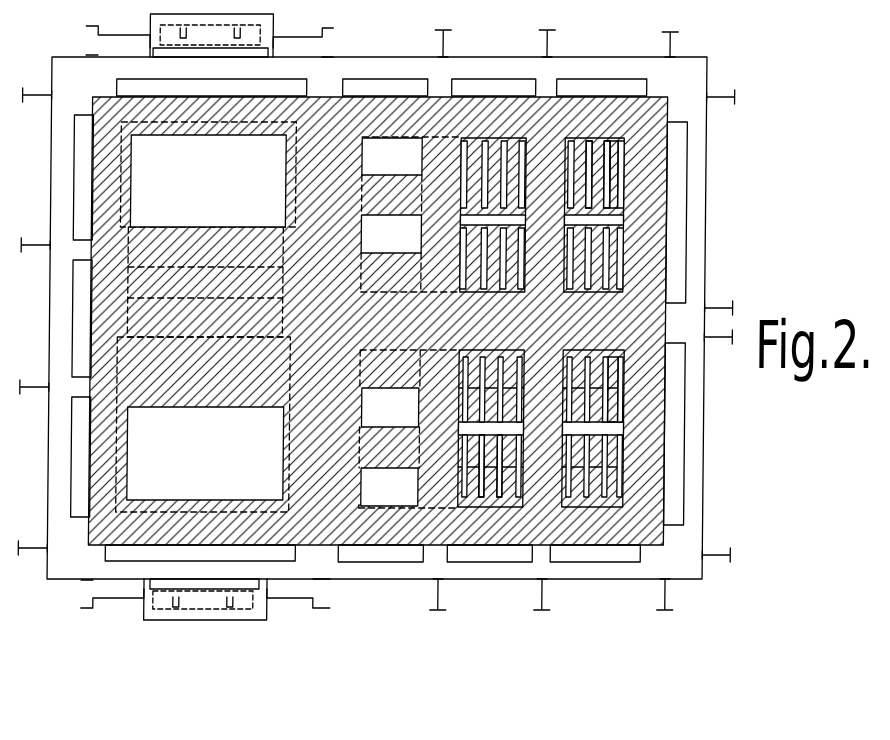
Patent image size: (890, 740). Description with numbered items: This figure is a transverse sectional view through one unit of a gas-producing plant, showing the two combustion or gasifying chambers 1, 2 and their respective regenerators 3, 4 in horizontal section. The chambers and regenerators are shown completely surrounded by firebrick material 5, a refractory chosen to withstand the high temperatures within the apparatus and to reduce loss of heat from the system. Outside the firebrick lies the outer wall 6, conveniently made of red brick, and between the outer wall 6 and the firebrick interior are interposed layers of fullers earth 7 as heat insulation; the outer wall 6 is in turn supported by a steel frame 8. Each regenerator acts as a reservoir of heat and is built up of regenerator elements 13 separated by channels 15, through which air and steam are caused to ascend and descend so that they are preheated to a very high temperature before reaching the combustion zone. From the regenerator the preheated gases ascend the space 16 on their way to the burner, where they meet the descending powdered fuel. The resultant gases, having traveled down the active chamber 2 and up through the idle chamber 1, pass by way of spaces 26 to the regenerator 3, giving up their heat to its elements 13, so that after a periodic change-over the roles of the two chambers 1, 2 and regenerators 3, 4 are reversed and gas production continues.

The combustion or gasifying chamber 1 is at (208, 181).
The combustion or gasifying chamber 2 is at (205, 453).
The regenerator 3 is at (579, 138).
The regenerator 4 is at (514, 508).
The firebrick material 5 is at (161, 352).
The outer wall 6 is at (62, 505).
The layers of fullers earth 7 is at (82, 455).
The steel frame 8 is at (707, 75).
The regenerator elements 13 is at (618, 138).
The channels 15 is at (621, 186).
The space 16 is at (390, 447).
The space 26 is at (391, 195).